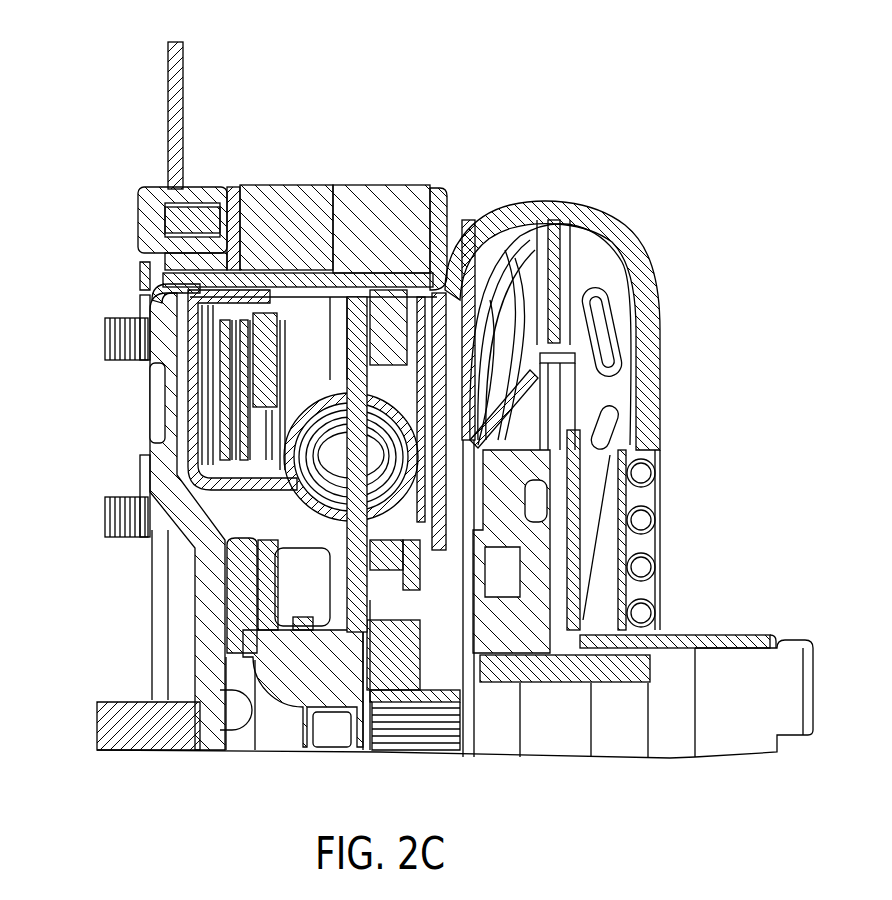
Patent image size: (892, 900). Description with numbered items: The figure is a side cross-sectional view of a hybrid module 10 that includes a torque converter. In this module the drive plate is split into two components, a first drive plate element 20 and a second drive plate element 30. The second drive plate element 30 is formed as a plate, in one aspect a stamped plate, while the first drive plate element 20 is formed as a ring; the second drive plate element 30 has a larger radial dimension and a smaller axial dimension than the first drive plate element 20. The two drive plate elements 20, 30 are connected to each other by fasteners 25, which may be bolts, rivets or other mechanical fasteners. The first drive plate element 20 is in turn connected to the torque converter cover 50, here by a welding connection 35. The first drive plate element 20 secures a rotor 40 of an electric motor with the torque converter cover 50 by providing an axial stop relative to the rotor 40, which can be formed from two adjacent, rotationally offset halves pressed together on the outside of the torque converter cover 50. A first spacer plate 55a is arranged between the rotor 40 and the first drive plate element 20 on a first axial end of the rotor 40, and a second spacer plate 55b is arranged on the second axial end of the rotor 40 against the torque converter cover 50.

The hybrid module 10 is at (385, 97).
The first drive plate element 20 is at (180, 258).
The fasteners 25 is at (182, 218).
The second drive plate element 30 is at (175, 160).
The welding connection 35 is at (182, 275).
The rotor 40 is at (377, 213).
The torque converter cover 50 is at (158, 450).
The first spacer plate 55a is at (245, 227).
The second spacer plate 55b is at (493, 205).